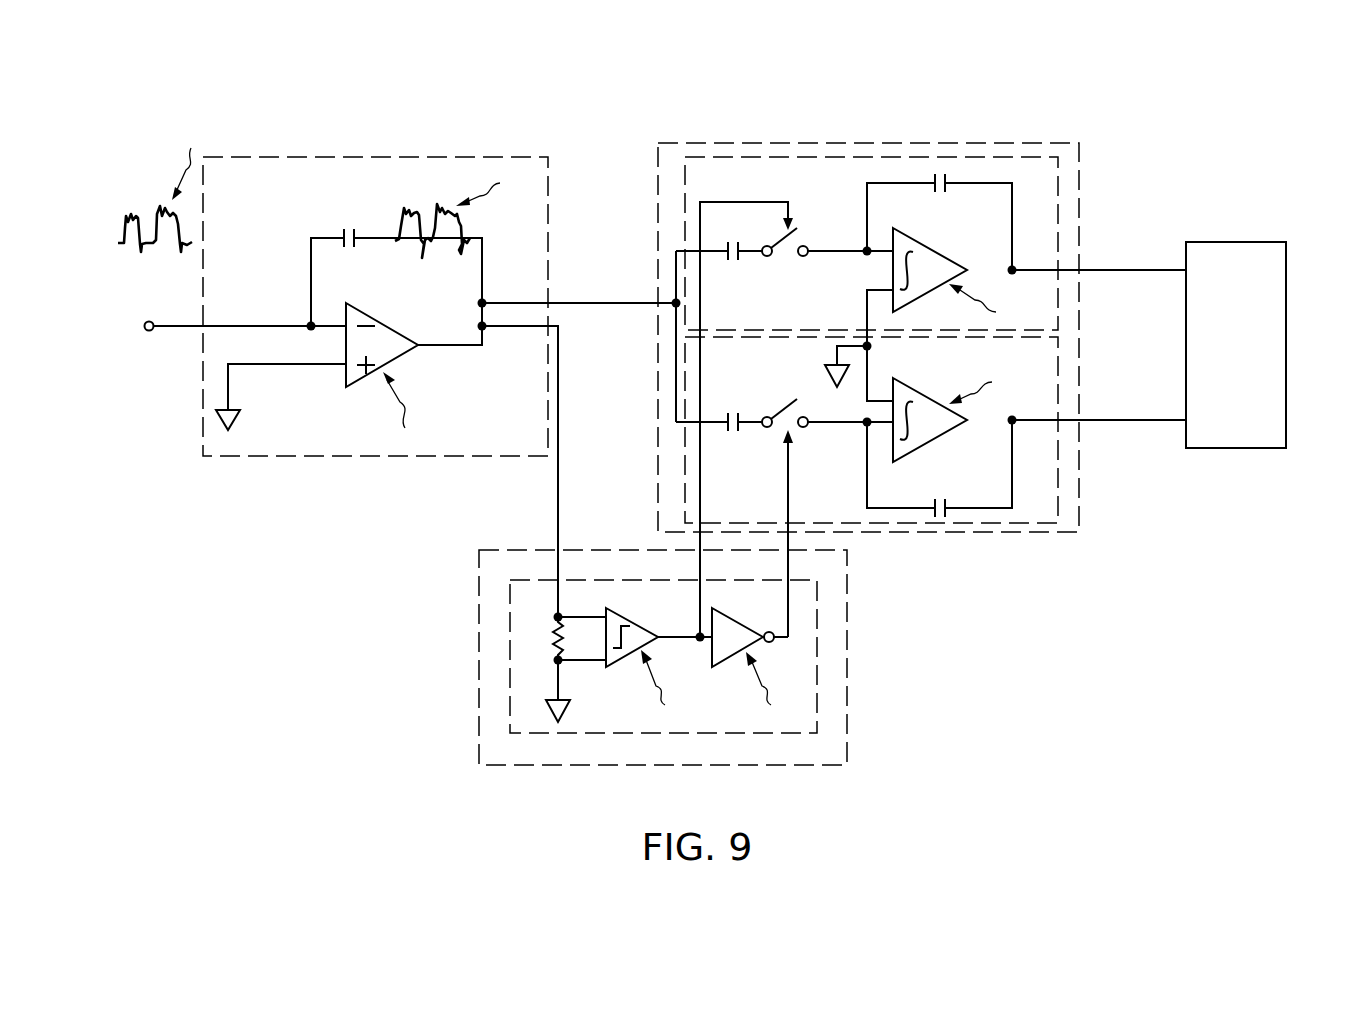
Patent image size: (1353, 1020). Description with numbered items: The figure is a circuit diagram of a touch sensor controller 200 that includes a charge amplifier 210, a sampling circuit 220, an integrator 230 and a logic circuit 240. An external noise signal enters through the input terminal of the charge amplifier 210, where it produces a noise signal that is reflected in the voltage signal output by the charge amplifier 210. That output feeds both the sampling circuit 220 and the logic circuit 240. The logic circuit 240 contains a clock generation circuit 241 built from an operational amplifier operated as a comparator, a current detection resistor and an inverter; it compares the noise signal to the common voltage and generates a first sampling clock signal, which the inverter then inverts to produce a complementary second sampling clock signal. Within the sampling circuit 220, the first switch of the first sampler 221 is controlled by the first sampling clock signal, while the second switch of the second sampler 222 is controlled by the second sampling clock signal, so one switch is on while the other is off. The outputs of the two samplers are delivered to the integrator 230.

The touch sensor controller 200 is at (1085, 35).
The charge amplifier 210 is at (495, 157).
The sampling circuit 220 is at (1032, 143).
The first sampler 221 is at (1058, 199).
The second sampler 222 is at (1058, 380).
The integrator 230 is at (1256, 242).
The logic circuit 240 is at (847, 628).
The clock generation circuit 241 is at (817, 588).